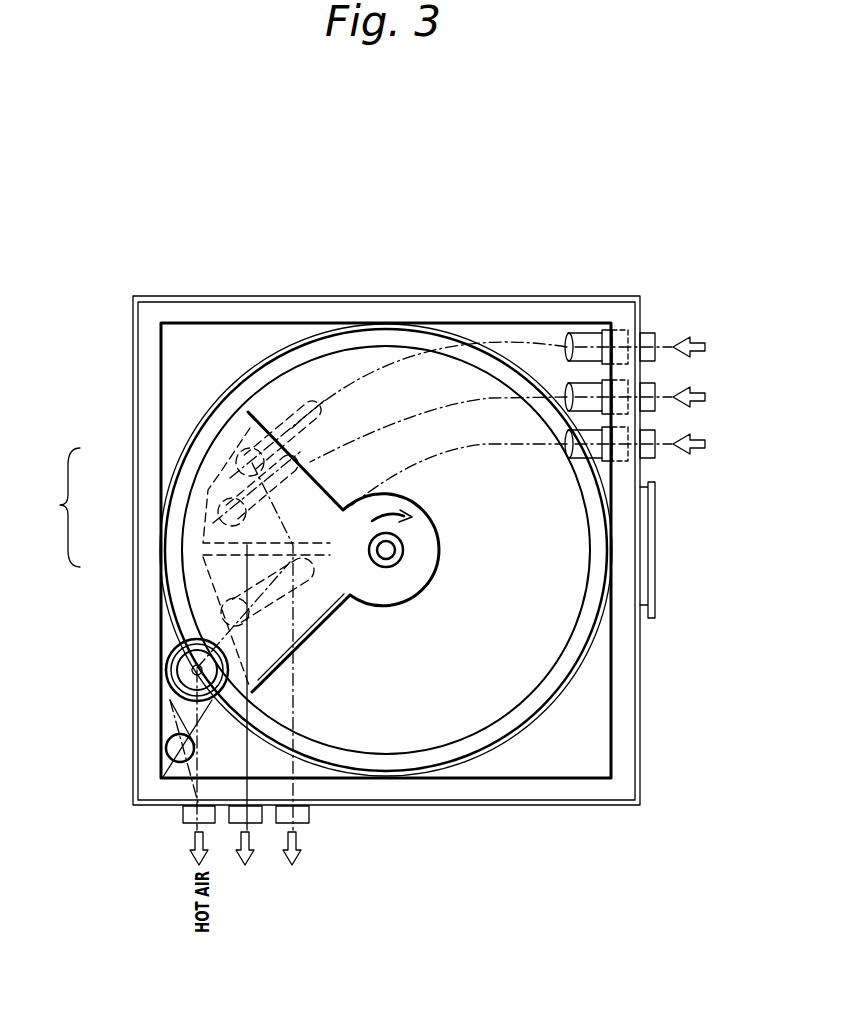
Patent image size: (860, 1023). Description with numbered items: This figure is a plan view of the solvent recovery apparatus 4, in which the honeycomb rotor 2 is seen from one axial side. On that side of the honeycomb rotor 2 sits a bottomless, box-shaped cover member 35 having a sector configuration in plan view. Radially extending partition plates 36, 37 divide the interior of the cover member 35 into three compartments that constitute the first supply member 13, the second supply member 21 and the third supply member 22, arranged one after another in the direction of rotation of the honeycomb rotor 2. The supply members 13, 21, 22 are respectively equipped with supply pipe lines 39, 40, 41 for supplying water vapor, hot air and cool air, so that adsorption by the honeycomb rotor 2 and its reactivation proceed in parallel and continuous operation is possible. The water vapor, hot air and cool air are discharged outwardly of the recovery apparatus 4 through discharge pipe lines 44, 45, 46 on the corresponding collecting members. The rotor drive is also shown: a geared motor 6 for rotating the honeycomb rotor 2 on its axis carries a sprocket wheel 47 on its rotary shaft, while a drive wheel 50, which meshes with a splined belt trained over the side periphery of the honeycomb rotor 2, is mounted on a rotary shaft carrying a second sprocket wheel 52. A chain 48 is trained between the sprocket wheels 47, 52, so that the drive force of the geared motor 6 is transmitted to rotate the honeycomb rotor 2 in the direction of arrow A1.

The honeycomb rotor 2 is at (425, 715).
The recovery apparatus 4 is at (623, 205).
The geared motor 6 is at (162, 758).
The first supply member 13 is at (222, 585).
The second supply member 21 is at (218, 500).
The third supply member 22 is at (250, 428).
The cover member 35 is at (54, 507).
The partition plate 36 is at (318, 494).
The partition plate 37 is at (330, 598).
The supply pipe line 39 is at (497, 447).
The supply pipe line 40 is at (447, 413).
The supply pipe line 41 is at (418, 357).
The discharge pipe line 44 is at (226, 727).
The discharge pipe line 45 is at (162, 779).
The discharge pipe line 46 is at (300, 662).
The sprocket wheel 47 is at (165, 740).
The chain 48 is at (170, 708).
The drive wheel 50 is at (168, 648).
The sprocket wheel 52 is at (185, 672).
The arrow A1 is at (402, 516).